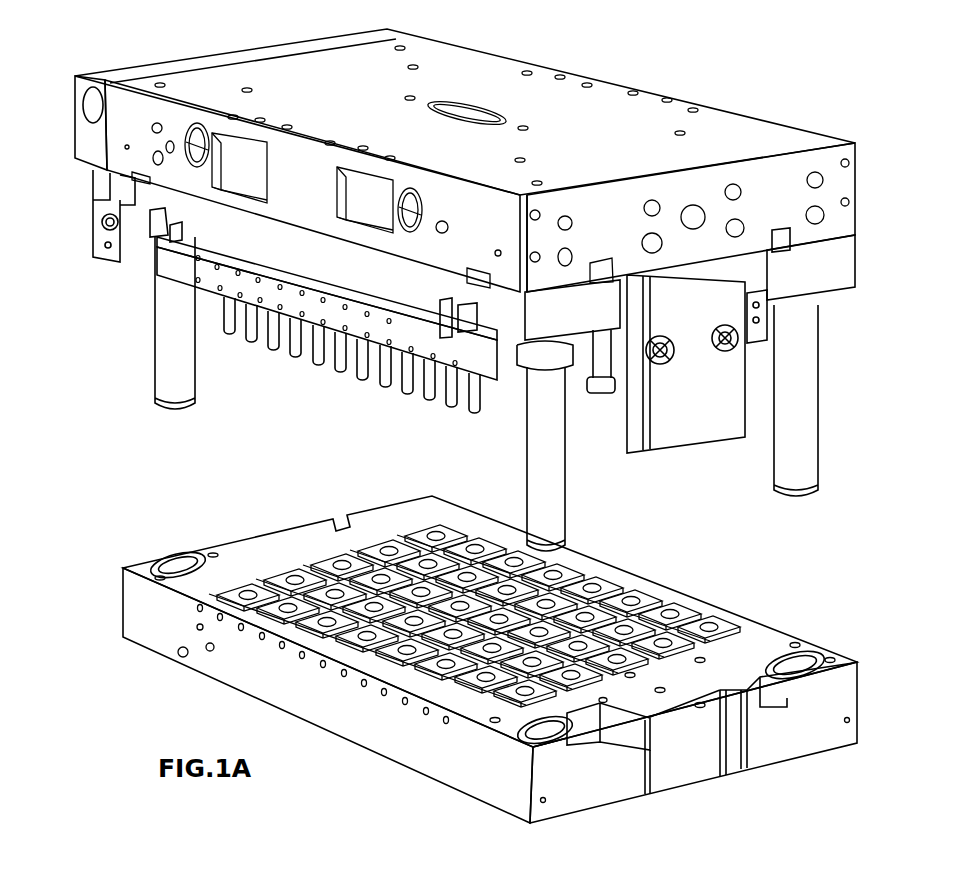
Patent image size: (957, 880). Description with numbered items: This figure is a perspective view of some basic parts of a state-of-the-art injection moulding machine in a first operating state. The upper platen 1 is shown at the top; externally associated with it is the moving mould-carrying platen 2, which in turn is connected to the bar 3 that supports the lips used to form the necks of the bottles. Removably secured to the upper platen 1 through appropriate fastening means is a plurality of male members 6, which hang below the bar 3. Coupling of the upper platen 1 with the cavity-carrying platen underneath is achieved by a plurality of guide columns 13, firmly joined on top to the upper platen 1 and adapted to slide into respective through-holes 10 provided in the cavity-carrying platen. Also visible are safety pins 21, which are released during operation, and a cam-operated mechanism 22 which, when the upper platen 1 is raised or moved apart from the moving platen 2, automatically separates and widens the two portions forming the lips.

The upper platen 1 is at (847, 182).
The moving mould-carrying platen 2 is at (833, 262).
The bar 3 is at (500, 387).
The male members 6 is at (330, 363).
The through-holes 10 is at (817, 655).
The guide columns 13 is at (548, 500).
The safety pins 21 is at (603, 393).
The cam-operated mechanism 22 is at (697, 423).